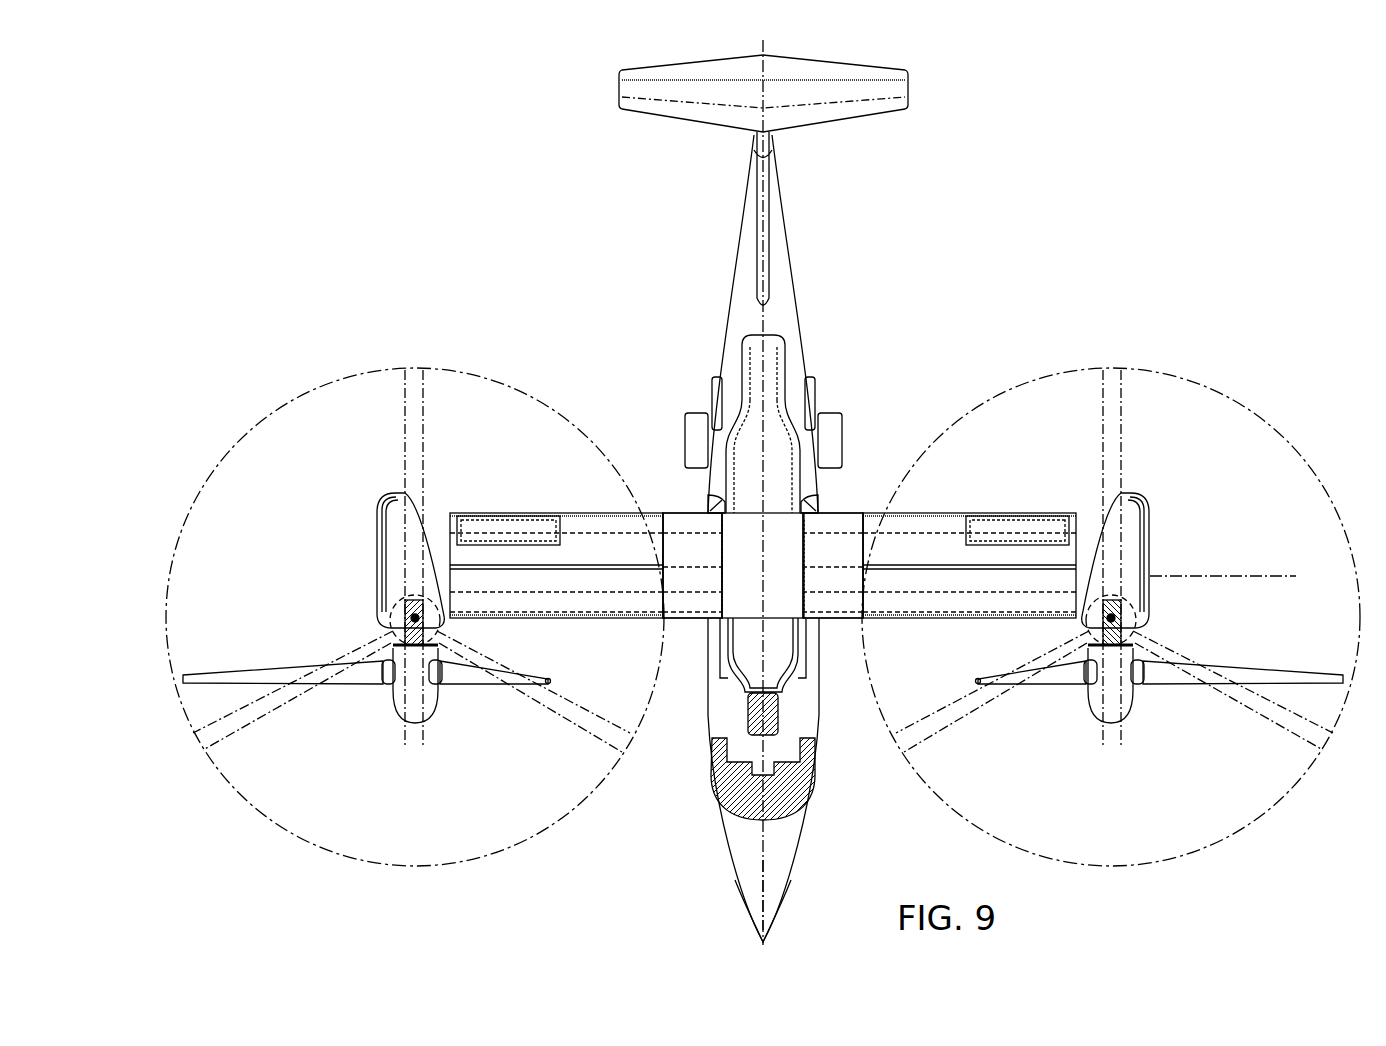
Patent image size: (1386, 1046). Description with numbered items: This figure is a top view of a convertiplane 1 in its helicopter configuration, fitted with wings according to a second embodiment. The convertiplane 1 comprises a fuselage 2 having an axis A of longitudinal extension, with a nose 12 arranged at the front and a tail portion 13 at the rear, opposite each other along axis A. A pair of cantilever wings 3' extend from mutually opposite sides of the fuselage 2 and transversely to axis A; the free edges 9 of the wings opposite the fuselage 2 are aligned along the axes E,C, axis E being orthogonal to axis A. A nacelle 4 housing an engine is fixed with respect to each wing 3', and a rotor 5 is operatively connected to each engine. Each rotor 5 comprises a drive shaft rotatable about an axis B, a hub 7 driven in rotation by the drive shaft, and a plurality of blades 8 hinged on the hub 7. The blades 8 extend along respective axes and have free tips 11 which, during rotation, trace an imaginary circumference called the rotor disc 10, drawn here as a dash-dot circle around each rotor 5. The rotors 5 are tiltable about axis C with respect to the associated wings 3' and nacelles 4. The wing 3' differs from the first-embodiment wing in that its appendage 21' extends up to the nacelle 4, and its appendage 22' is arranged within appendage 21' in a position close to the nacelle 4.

The convertiplane 1 is at (1045, 249).
The fuselage 2 is at (810, 354).
The wing 3' is at (764, 496).
The nacelle 4 is at (398, 548).
The rotor 5 is at (447, 698).
The hub 7 is at (398, 706).
The blades 8 is at (413, 428).
The free edge 9 is at (448, 577).
The rotor disc 10 is at (215, 438).
The free tips 11 is at (185, 677).
The nose 12 is at (745, 897).
The tail portion 13 is at (780, 117).
The appendage 21' is at (765, 510).
The appendage 22' is at (763, 489).
The axis A is at (765, 865).
The axis B is at (432, 712).
The axes E,C is at (1210, 576).